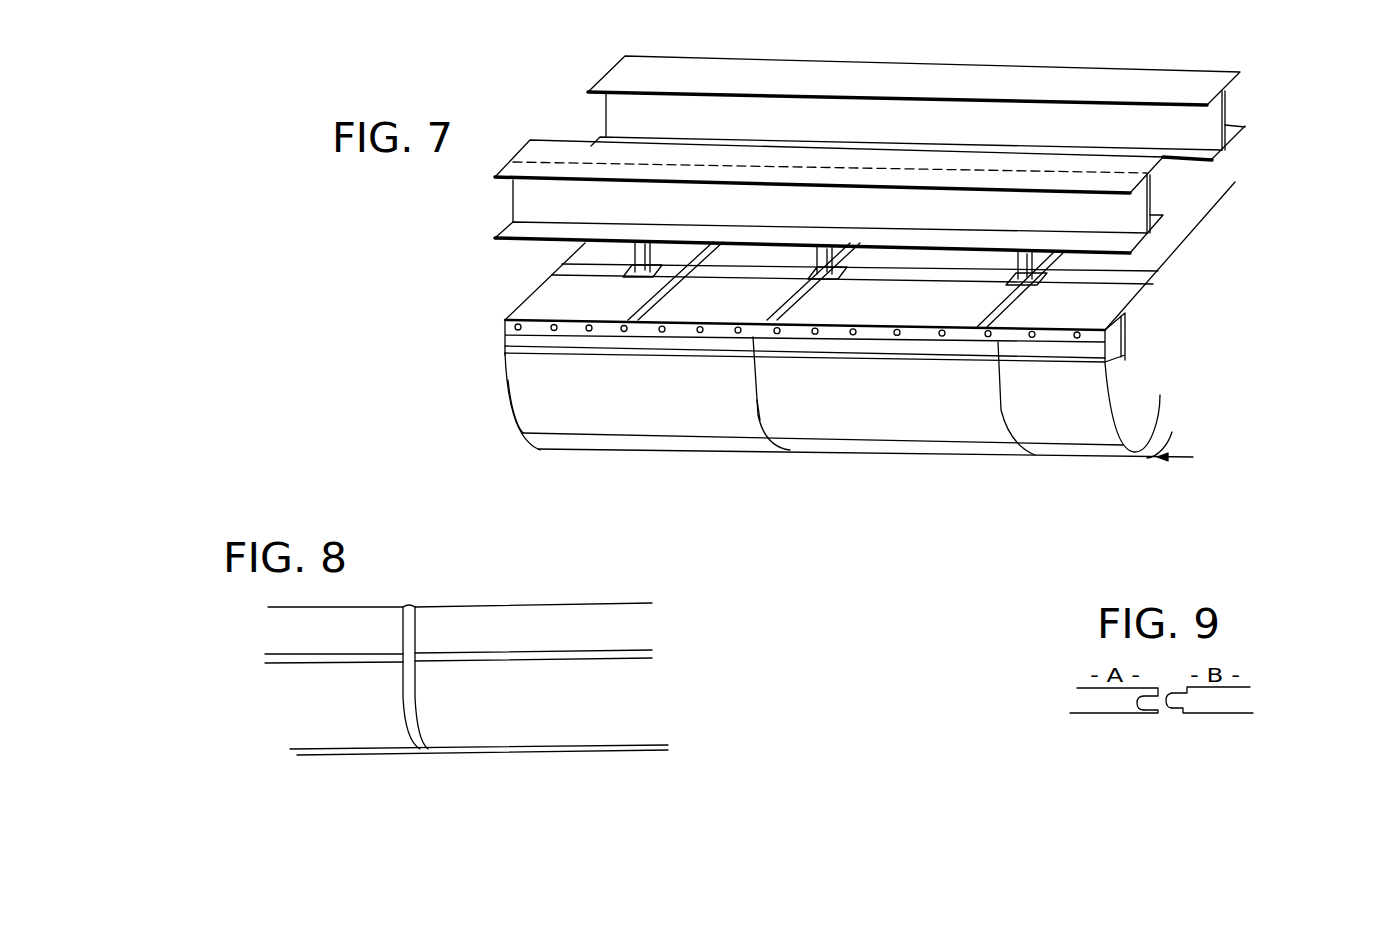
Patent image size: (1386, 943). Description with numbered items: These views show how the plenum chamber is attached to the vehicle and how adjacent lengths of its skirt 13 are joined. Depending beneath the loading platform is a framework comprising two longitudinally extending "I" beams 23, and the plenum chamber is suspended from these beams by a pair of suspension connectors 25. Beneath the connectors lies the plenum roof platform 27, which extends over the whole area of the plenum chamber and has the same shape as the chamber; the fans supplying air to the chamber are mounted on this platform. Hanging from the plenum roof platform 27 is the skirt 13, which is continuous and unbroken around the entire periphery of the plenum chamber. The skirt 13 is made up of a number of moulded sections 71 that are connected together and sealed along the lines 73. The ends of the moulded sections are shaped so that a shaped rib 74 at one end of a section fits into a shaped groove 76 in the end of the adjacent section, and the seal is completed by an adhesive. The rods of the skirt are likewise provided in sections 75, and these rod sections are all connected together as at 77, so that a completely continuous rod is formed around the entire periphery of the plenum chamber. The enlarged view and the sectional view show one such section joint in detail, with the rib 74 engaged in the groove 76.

In FIG. 7, the skirt 13 is at (1056, 460).
In FIG. 7, the "I" beams 23 is at (1167, 200).
In FIG. 7, the suspension connectors 25 is at (634, 253).
In FIG. 7, the plenum roof platform 27 is at (1140, 298).
In FIG. 7, the sections 71 is at (1043, 430).
In FIG. 8, the sections 71 is at (353, 713).
In FIG. 9, the sections 71 is at (1097, 705).
In FIG. 7, the lines 73 is at (510, 380).
In FIG. 9, the shaped rib 74 is at (1172, 708).
In FIG. 7, the sections 75 is at (620, 433).
In FIG. 9, the shaped groove 76 is at (1133, 708).
In FIG. 7, the connection 77 is at (768, 412).
In FIG. 8, the connection 77 is at (410, 605).